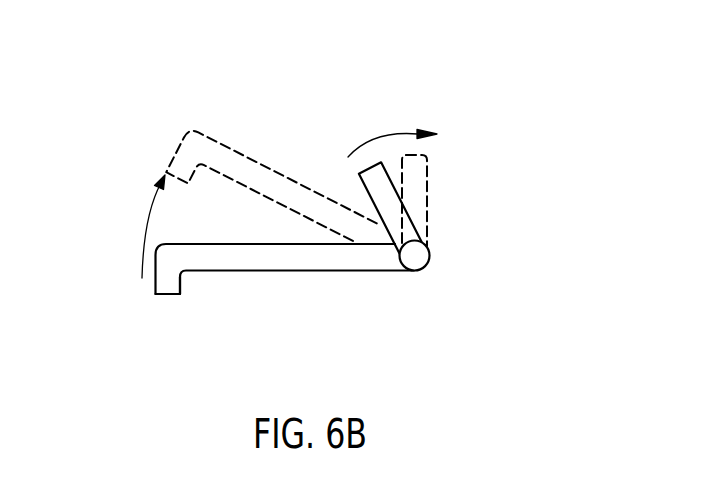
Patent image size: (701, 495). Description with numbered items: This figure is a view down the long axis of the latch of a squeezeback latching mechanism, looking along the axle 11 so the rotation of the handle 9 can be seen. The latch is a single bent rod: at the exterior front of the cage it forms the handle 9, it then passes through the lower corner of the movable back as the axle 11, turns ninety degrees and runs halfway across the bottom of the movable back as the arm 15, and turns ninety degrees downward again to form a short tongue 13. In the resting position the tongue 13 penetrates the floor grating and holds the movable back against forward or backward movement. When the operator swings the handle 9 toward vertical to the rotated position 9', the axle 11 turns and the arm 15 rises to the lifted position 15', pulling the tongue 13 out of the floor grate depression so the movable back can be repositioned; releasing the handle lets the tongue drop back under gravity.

The handle 9 is at (358, 196).
The rotated handle position 9' is at (496, 197).
The axle 11 is at (430, 256).
The tongue 13 is at (165, 285).
The arm 15 is at (285, 306).
The lifted arm position 15' is at (254, 167).